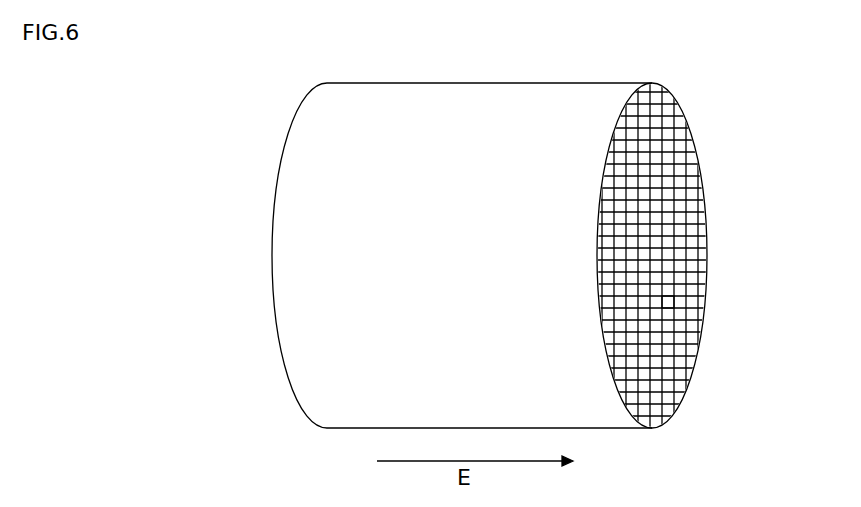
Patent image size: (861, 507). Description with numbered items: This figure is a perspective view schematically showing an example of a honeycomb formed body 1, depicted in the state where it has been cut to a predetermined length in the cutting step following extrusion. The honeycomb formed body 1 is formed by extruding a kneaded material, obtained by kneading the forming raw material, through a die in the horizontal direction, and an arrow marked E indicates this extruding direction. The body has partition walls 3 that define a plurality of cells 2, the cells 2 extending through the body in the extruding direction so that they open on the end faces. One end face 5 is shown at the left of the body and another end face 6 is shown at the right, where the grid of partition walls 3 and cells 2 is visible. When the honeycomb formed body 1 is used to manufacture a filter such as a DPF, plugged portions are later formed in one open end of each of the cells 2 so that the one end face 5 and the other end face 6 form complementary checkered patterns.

The honeycomb formed body 1 is at (448, 79).
The cells 2 is at (692, 150).
The partition walls 3 is at (670, 240).
The one end face 5 is at (272, 282).
The another end face 6 is at (673, 303).